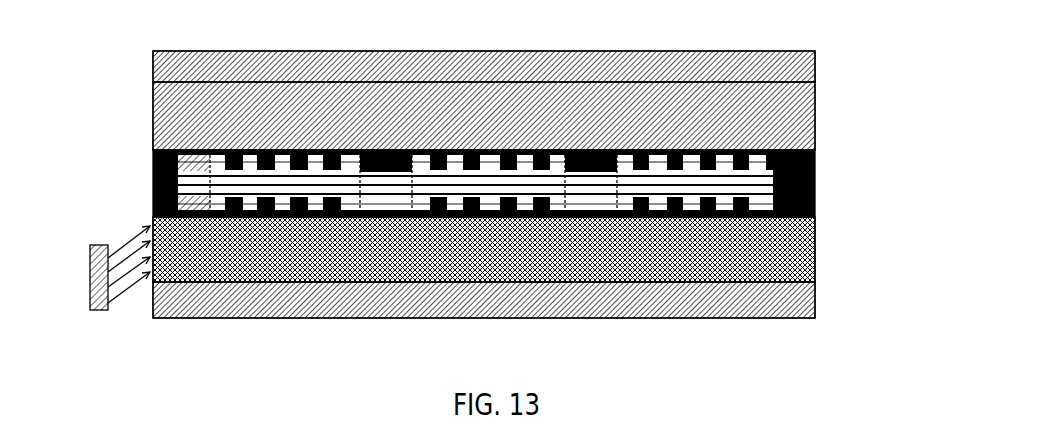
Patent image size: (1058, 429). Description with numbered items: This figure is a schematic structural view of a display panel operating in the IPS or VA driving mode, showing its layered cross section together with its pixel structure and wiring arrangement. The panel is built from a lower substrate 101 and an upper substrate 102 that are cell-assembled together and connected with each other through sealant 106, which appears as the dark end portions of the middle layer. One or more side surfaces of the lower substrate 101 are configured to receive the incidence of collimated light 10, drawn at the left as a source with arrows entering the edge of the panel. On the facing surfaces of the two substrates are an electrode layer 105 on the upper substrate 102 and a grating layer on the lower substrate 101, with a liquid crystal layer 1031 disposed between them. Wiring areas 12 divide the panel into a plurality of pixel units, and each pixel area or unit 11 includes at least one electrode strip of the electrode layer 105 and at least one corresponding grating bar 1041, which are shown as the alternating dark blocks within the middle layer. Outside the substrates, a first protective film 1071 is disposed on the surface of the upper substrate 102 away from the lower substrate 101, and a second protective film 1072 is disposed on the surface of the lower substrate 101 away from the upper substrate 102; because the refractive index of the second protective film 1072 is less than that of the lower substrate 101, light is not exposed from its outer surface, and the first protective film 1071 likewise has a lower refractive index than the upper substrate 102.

The collimated light 10 is at (103, 268).
The pixel area 11 is at (474, 138).
The wiring area 12 is at (598, 171).
The lower substrate 101 is at (836, 252).
The upper substrate 102 is at (829, 112).
The electrode layer 105 is at (153, 152).
The sealant 106 is at (469, 158).
The liquid crystal layer 1031 is at (817, 174).
The grating bar 1041 is at (153, 187).
The first protective film 1071 is at (836, 63).
The second protective film 1072 is at (836, 297).